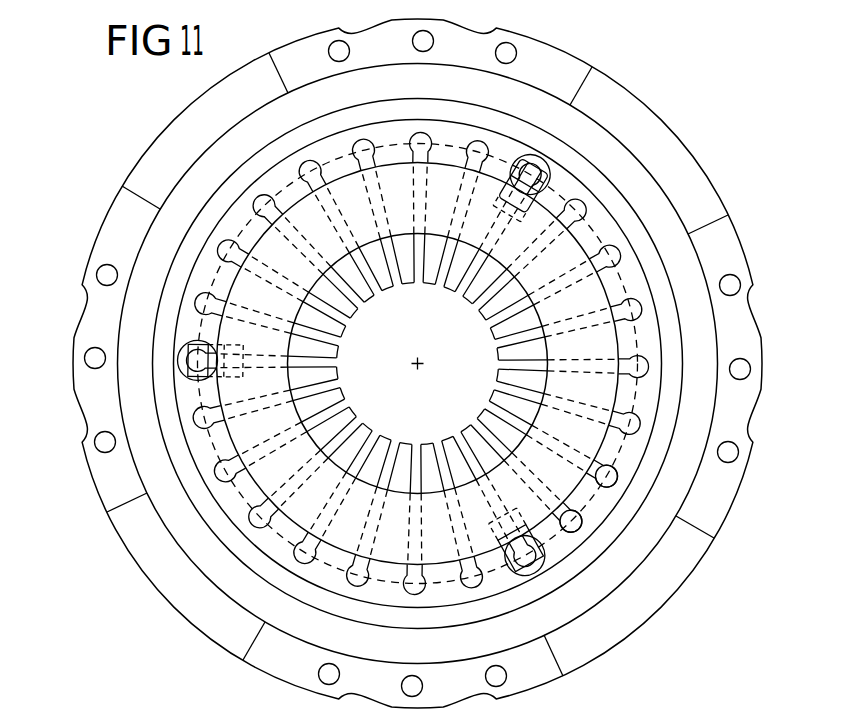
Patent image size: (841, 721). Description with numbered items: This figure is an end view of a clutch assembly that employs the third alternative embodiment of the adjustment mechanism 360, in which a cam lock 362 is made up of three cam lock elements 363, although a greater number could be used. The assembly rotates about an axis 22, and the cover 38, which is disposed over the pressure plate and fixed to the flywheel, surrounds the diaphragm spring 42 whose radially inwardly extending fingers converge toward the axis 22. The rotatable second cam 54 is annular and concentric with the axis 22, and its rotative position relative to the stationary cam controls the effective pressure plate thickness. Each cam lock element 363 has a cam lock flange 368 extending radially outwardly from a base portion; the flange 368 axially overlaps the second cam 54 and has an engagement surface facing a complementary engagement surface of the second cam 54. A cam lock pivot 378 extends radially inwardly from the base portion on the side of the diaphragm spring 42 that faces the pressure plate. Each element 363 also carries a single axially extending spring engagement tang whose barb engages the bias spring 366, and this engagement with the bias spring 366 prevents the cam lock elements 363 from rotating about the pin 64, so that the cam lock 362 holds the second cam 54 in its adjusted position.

The axis 22 is at (420, 358).
The cover 38 is at (152, 147).
The diaphragm spring 42 is at (607, 478).
The second cam 54 is at (576, 518).
The pin 64 is at (533, 158).
The adjustment mechanism 360 is at (626, 394).
The cam lock 362 is at (193, 338).
The cam lock elements 363 is at (200, 378).
The bias spring 366 is at (283, 538).
The cam lock flange 368 is at (546, 165).
The cam lock pivot 378 is at (552, 210).